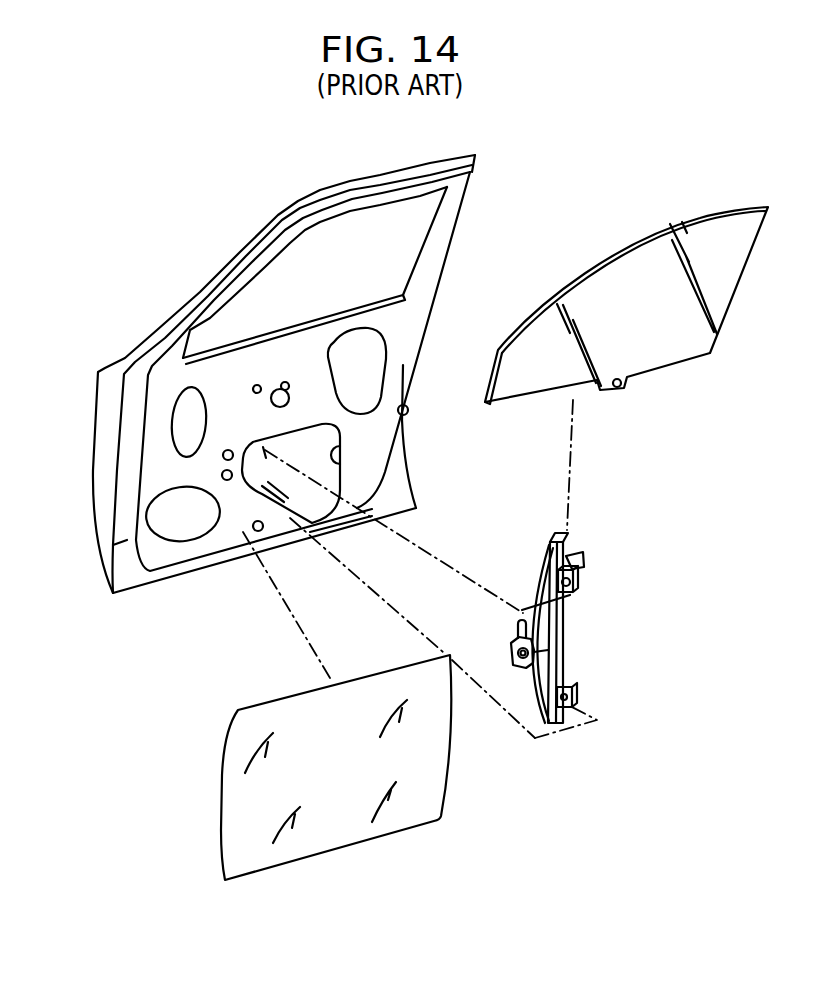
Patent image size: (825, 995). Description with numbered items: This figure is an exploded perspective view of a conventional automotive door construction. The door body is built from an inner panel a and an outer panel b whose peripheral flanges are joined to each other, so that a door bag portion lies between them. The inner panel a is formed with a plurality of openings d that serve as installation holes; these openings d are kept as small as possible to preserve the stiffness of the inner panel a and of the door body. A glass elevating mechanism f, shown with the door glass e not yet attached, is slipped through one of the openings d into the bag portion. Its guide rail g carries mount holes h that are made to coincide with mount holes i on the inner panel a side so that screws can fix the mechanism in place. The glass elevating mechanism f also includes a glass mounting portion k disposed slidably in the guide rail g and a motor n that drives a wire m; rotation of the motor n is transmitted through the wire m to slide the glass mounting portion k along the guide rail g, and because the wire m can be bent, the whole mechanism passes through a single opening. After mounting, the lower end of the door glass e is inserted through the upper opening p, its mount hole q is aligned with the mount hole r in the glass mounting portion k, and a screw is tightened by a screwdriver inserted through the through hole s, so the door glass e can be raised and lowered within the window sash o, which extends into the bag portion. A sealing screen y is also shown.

The inner panel a is at (113, 593).
The outer panel b is at (100, 475).
The openings d is at (340, 467).
The door glass e is at (723, 313).
The glass elevating mechanism f is at (563, 741).
The guide rail g is at (563, 661).
The mount holes h is at (575, 590).
The mount holes i is at (254, 388).
The glass mounting portion k is at (575, 588).
The wire m is at (535, 592).
The motor n is at (523, 668).
The window sash o is at (432, 252).
The upper opening p is at (383, 297).
The mount hole q is at (622, 390).
The mount hole r is at (580, 556).
The through hole s is at (287, 388).
The sealing screen y is at (357, 812).